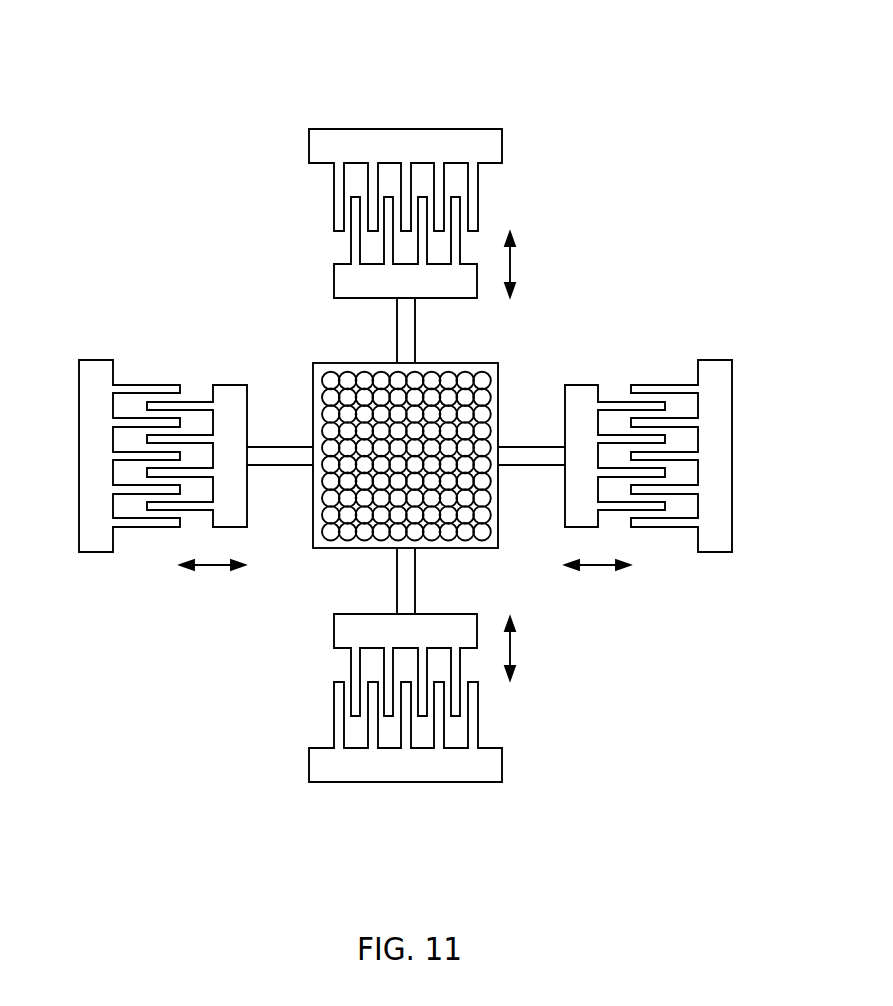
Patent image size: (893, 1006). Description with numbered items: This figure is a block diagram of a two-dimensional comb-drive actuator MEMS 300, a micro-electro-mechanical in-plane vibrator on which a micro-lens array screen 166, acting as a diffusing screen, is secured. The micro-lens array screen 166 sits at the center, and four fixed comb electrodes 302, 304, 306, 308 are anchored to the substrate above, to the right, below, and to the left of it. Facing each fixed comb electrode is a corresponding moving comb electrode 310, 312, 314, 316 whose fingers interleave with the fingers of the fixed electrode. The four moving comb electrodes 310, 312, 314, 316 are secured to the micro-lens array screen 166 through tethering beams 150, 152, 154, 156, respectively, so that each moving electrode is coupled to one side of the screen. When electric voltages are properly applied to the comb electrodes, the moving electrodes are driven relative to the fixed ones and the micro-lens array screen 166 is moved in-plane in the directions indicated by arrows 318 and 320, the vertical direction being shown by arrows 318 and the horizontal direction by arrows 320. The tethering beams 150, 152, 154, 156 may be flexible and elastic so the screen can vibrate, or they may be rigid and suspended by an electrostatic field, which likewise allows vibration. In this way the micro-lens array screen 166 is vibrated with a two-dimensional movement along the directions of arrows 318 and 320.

The comb-drive actuator MEMS 300 is at (207, 66).
The fixed comb electrode 302 is at (307, 149).
The fixed comb electrode 304 is at (712, 360).
The fixed comb electrode 306 is at (307, 768).
The fixed comb electrode 308 is at (92, 360).
The moving comb electrode 310 is at (332, 285).
The moving comb electrode 312 is at (583, 385).
The moving comb electrode 314 is at (333, 636).
The moving comb electrode 316 is at (225, 385).
The arrow 318 is at (533, 456).
The arrow 320 is at (405, 581).
The tethering beam 150 is at (415, 338).
The tethering beam 152 is at (510, 447).
The tethering beam 154 is at (415, 595).
The tethering beam 156 is at (255, 448).
The micro-lens array screen 166 is at (490, 363).